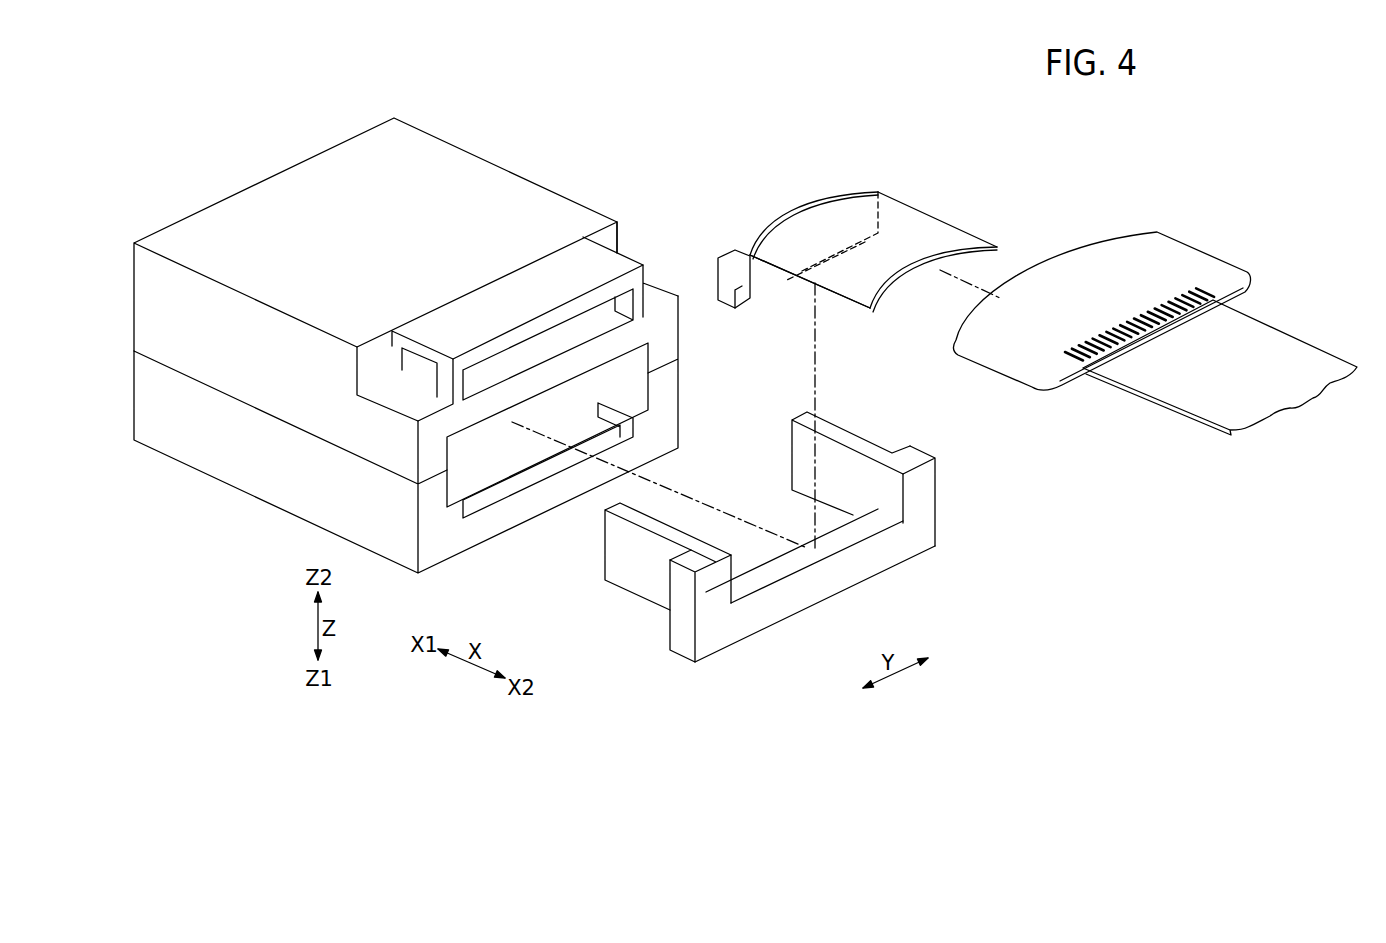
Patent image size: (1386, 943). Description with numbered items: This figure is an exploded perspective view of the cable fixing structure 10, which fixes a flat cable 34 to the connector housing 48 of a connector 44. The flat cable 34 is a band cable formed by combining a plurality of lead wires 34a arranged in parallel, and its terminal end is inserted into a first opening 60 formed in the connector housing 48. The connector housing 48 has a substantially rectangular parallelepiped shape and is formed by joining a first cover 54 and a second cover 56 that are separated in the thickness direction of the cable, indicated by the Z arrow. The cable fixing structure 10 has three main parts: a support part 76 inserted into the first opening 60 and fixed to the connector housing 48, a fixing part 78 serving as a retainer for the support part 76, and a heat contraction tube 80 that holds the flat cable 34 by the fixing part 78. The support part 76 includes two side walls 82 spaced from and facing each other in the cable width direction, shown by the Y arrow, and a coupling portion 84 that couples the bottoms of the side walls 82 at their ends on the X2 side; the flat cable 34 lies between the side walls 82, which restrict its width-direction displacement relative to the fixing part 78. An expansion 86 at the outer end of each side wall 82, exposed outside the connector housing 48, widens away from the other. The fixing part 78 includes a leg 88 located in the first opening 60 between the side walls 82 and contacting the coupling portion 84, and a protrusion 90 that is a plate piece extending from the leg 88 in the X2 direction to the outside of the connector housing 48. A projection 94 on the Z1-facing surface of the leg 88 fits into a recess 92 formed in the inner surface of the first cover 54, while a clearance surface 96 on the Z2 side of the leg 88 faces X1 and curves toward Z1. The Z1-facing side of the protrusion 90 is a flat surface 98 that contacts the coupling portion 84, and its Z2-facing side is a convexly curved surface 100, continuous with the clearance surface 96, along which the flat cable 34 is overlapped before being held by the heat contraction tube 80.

The cable fixing structure 10 is at (1155, 298).
The flat cable 34 is at (1207, 407).
The lead wires 34a is at (1198, 298).
The connector 44 is at (603, 206).
The connector housing 48 is at (495, 177).
The first cover 54 is at (435, 434).
The second cover 56 is at (406, 334).
The first opening 60 is at (637, 387).
The support part 76 is at (807, 548).
The fixing part 78 is at (854, 250).
The heat contraction tube 80 is at (1148, 238).
The side walls 82 is at (863, 445).
The coupling portion 84 is at (857, 568).
The expansion 86 is at (683, 652).
The leg 88 is at (733, 273).
The protrusion 90 is at (911, 288).
The recess 92 is at (547, 463).
The projection 94 is at (725, 305).
The clearance surface 96 is at (756, 240).
The flat surface 98 is at (847, 300).
The convexly curved surface 100 is at (912, 219).